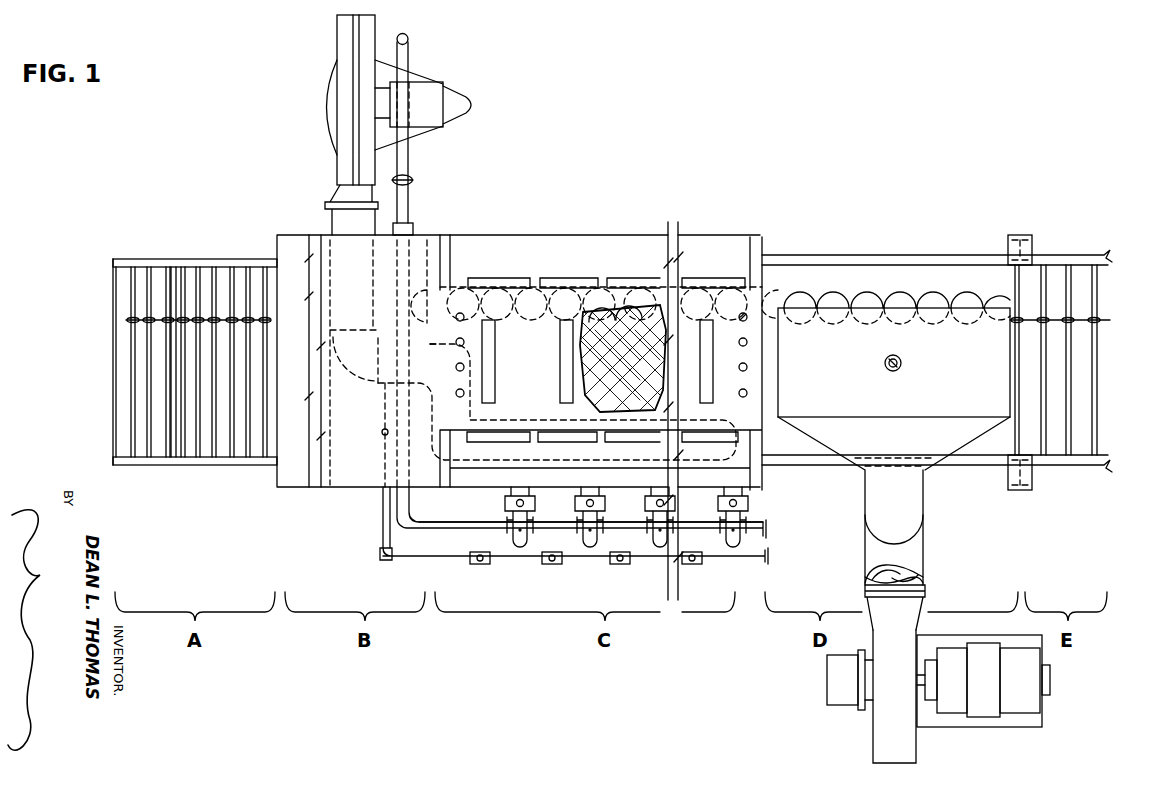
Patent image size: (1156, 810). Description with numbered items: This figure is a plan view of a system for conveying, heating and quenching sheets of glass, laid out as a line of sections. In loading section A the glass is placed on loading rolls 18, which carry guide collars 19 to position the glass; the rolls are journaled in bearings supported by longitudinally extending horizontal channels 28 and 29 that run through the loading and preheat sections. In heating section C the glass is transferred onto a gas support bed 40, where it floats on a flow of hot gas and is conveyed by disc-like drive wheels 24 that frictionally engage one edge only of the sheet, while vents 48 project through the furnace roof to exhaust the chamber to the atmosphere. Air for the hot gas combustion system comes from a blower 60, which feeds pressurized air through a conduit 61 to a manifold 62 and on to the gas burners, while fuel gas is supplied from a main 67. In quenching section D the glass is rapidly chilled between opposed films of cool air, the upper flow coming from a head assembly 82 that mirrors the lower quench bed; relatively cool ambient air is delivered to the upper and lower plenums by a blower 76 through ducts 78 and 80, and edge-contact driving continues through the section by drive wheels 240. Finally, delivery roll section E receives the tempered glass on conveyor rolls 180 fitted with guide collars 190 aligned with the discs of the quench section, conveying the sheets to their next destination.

The loading rolls 18 is at (179, 300).
The guide collars 19 is at (150, 318).
The drive wheels 24 is at (546, 310).
The horizontal channel 28 is at (226, 260).
The horizontal channel 29 is at (212, 466).
The gas support bed 40 is at (630, 365).
The vents 48 is at (560, 375).
The blower 60 is at (337, 47).
The conduit 61 is at (337, 221).
The manifold 62 is at (549, 422).
The main 67 is at (469, 511).
The blower 76 is at (875, 741).
The duct 78 is at (868, 556).
The duct 80 is at (868, 507).
The head assembly 82 is at (946, 381).
The conveyor rolls 180 is at (1072, 390).
The guide collars 190 is at (1066, 318).
The drive wheels 240 is at (962, 293).